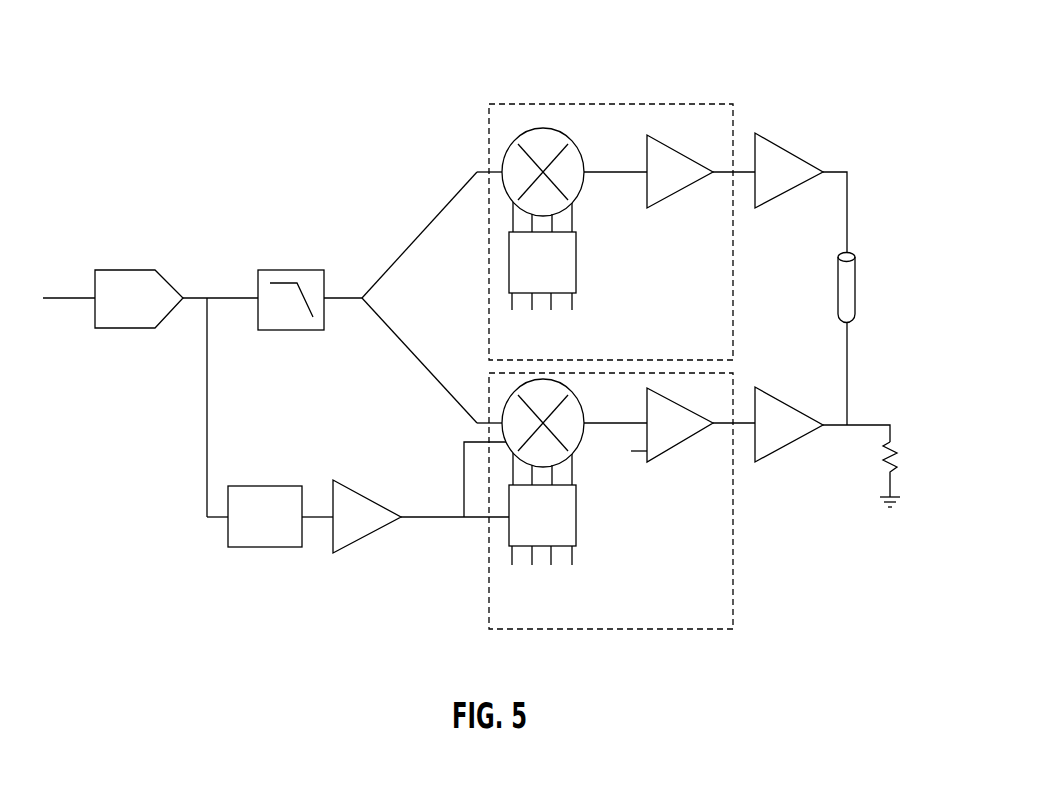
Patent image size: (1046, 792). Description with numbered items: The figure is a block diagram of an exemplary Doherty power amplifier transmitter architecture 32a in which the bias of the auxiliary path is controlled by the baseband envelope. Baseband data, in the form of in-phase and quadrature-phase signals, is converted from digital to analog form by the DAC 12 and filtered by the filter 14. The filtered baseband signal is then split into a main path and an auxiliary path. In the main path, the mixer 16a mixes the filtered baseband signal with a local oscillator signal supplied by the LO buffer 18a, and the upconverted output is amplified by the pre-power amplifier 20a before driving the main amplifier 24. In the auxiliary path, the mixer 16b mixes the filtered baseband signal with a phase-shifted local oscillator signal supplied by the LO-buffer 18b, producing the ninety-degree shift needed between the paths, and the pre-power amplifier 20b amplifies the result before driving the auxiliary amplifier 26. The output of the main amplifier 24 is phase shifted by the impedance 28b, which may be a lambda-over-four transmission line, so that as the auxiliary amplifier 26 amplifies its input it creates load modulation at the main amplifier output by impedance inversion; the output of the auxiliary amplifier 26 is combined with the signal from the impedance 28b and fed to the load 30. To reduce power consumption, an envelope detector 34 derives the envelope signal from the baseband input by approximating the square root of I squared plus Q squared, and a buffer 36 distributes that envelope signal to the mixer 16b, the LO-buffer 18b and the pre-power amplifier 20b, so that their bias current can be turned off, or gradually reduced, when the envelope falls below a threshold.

The DAC 12 is at (171, 282).
The filter 14 is at (327, 281).
The mixer 16a is at (585, 158).
The mixer 16b is at (585, 420).
The LO buffer 18a is at (577, 257).
The LO-buffer 18b is at (577, 510).
The pre-power amplifier 20a is at (693, 157).
The pre-power amplifier 20b is at (668, 454).
The main amplifier 24 is at (797, 153).
The auxiliary amplifier 26 is at (797, 407).
The impedance 28b is at (888, 291).
The load 30 is at (928, 462).
The DPA transmitter architecture 32a is at (600, 39).
The envelope detector 34 is at (302, 494).
The buffer 36 is at (361, 490).